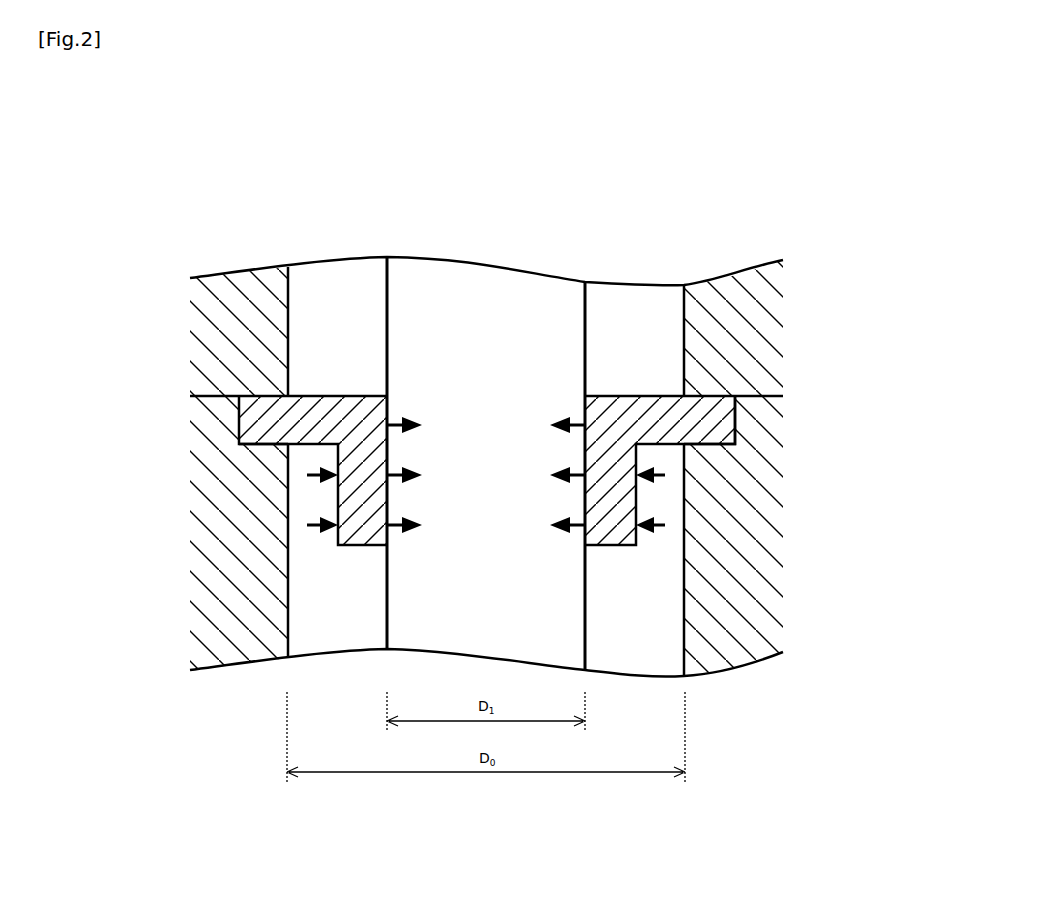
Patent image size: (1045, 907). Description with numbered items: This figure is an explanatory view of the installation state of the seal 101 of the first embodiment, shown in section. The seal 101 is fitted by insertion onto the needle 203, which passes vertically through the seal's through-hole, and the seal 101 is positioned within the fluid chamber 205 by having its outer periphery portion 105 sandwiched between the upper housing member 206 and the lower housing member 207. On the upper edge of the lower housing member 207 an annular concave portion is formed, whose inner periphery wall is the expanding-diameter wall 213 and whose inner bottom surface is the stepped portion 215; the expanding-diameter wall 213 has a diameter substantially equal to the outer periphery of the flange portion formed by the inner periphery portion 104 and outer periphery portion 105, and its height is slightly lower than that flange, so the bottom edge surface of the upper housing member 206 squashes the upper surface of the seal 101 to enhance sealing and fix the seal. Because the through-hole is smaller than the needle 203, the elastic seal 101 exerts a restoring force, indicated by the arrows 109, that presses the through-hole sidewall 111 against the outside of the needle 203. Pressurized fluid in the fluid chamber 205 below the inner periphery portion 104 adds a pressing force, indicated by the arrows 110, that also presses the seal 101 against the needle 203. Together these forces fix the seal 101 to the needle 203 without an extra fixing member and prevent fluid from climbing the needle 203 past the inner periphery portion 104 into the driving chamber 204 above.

The seal 101 is at (362, 550).
The inner periphery portion 104 is at (317, 403).
The outer periphery portion 105 is at (268, 397).
The seal restoring force 109 is at (397, 530).
The pressing force 110 is at (320, 517).
The through-hole sidewall 111 is at (400, 407).
The needle 203 is at (473, 285).
The driving chamber 204 is at (624, 326).
The fluid chamber 205 is at (638, 622).
The upper housing member 206 is at (187, 369).
The lower housing member 207 is at (190, 428).
The expanding-diameter wall 213 is at (238, 440).
The stepped portion 215 is at (737, 415).